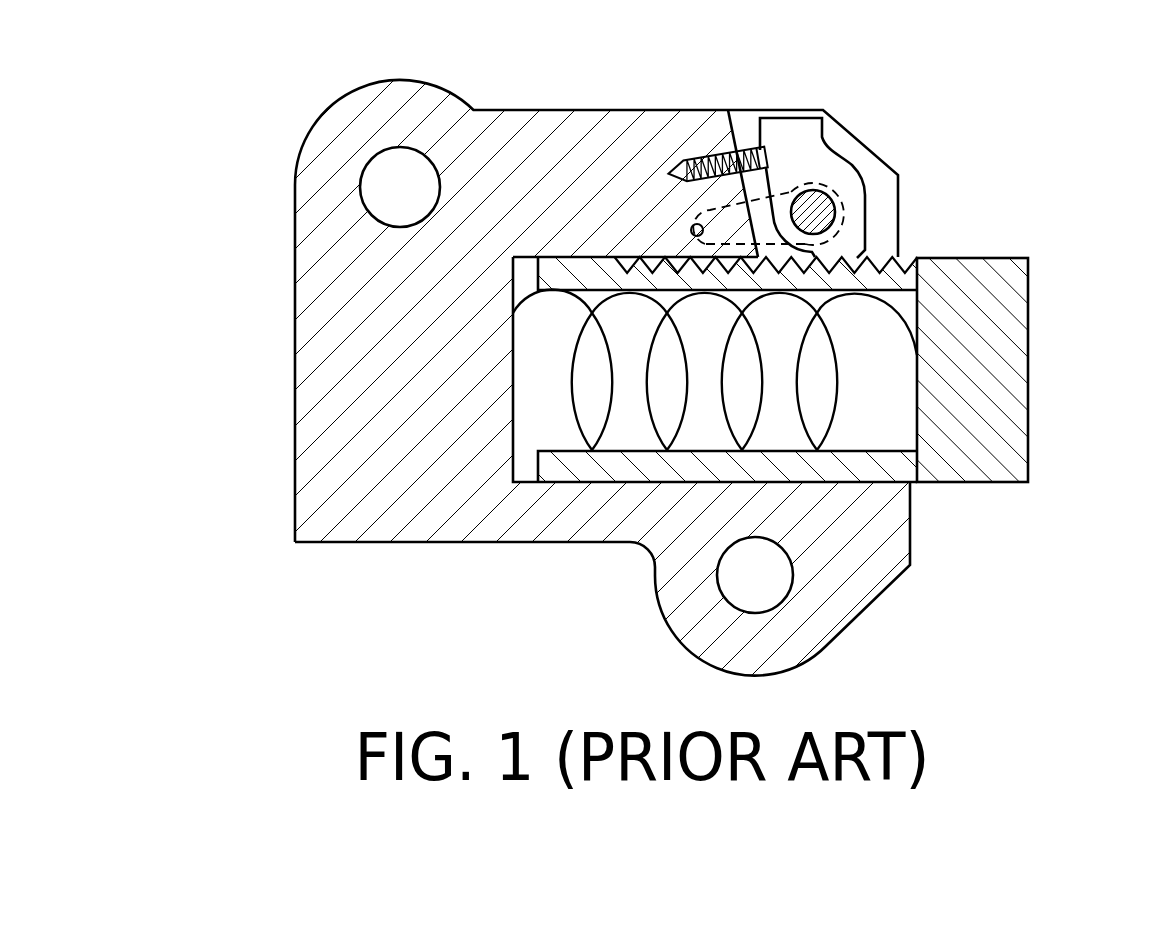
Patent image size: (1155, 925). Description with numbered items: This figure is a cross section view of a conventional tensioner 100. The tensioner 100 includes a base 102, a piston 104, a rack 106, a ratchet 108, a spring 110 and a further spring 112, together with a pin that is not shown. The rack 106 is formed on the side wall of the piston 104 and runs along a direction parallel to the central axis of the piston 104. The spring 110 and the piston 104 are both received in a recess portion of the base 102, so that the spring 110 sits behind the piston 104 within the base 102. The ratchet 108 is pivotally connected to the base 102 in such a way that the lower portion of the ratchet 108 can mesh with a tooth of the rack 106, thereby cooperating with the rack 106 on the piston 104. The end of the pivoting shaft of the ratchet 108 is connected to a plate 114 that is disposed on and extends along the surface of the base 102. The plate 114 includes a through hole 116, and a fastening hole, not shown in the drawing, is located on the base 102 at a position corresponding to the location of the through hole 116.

The tensioner 100 is at (977, 102).
The base 102 is at (307, 325).
The piston 104 is at (1010, 347).
The rack 106 is at (877, 258).
The ratchet 108 is at (813, 133).
The spring 110 is at (837, 410).
The spring 112 is at (747, 148).
The plate 114 is at (848, 205).
The through hole 116 is at (697, 217).